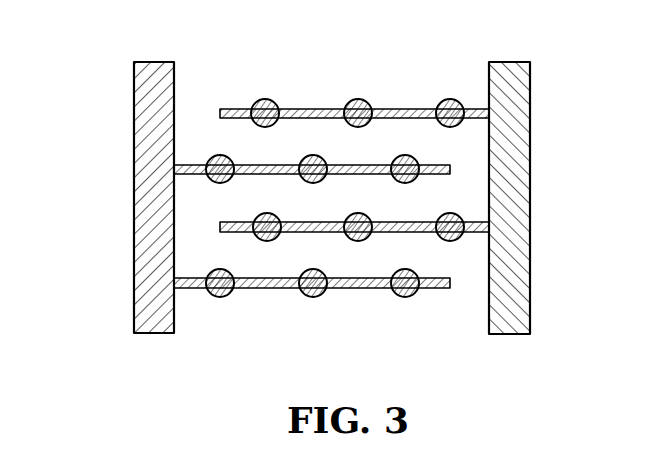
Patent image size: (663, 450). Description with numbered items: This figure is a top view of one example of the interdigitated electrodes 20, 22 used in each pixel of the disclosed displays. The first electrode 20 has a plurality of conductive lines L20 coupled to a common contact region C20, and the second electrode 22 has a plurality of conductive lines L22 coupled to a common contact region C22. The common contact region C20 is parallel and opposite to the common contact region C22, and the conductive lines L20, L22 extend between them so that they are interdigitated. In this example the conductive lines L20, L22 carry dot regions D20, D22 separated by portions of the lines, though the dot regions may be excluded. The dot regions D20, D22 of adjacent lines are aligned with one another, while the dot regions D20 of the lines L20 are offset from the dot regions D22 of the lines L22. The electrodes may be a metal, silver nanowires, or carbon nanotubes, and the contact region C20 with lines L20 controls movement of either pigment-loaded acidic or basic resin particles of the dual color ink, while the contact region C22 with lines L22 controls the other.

The second electrode 22 is at (155, 338).
The first electrode 20 is at (512, 338).
The common contact region C22 is at (134, 192).
The common contact region C20 is at (530, 193).
The conductive lines L20 is at (354, 125).
The conductive lines L22 is at (312, 219).
The dot regions D20 is at (400, 108).
The dot regions D22 is at (310, 292).